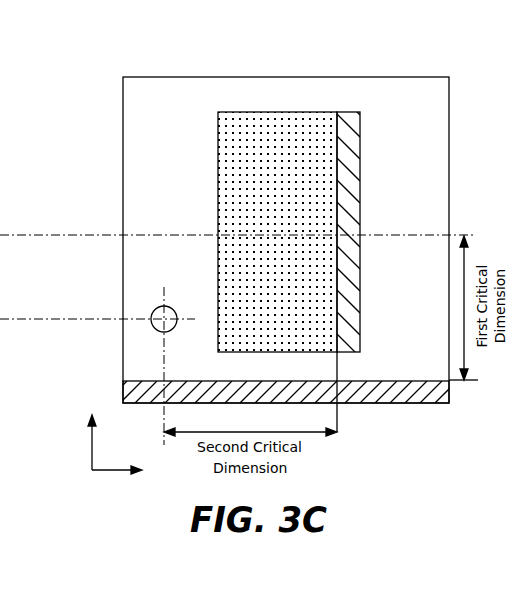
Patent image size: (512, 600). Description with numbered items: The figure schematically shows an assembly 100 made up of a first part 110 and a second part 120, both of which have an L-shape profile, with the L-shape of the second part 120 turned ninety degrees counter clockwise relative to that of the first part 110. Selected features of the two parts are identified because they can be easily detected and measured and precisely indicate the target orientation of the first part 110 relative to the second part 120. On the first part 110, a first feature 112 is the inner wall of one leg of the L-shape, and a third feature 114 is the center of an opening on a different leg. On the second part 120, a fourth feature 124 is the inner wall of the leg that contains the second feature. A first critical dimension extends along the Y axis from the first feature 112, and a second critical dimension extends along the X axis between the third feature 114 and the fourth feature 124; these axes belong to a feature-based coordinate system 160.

The assembly 100 is at (418, 68).
The first part 110 is at (425, 393).
The first feature 112 is at (400, 380).
The third feature 114 is at (152, 311).
The second part 120 is at (238, 125).
The fourth feature 124 is at (337, 140).
The feature-based coordinate system 160 is at (90, 466).